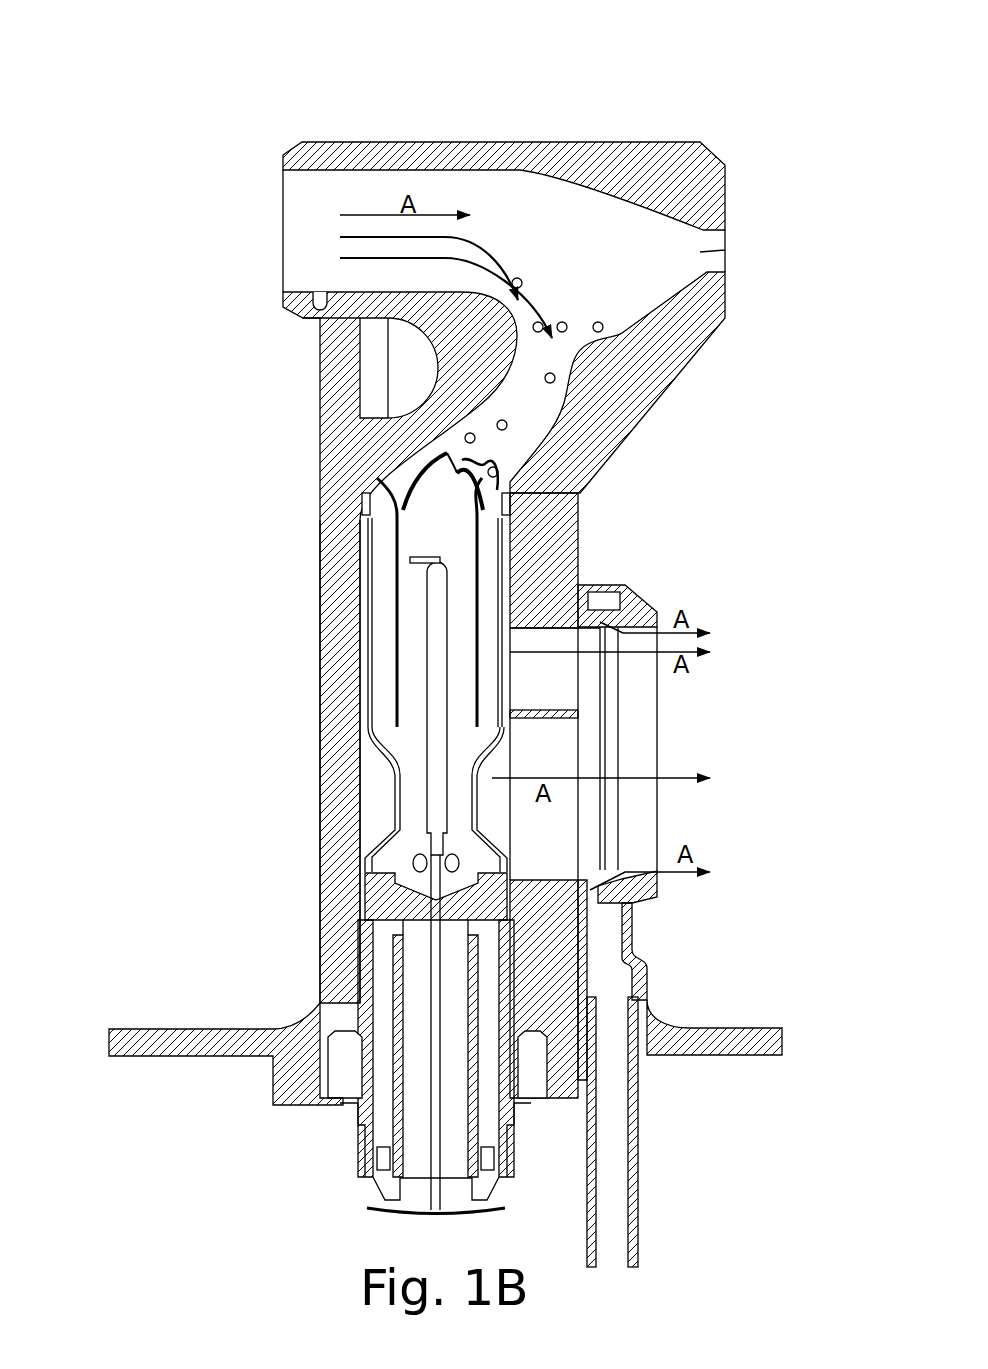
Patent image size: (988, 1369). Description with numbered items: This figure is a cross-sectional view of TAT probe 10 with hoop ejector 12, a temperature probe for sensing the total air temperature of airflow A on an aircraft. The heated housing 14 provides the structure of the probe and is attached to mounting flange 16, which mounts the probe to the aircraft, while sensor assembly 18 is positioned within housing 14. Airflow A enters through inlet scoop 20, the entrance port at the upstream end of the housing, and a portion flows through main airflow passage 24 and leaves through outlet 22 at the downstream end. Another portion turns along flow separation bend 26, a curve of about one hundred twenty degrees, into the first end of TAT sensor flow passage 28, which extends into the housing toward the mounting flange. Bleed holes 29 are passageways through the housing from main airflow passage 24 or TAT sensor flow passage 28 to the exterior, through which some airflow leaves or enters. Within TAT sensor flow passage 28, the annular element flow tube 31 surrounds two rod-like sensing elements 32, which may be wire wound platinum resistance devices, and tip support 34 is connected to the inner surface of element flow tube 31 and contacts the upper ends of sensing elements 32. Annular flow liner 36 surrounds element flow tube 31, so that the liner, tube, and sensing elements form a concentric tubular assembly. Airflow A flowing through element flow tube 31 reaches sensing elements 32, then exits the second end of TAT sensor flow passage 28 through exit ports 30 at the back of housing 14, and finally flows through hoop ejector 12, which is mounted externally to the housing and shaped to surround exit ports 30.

The TAT probe 10 is at (112, 90).
The hoop ejector 12 is at (652, 588).
The housing 14 is at (668, 337).
The mounting flange 16 is at (176, 1040).
The sensor assembly 18 is at (343, 705).
The inlet scoop 20 is at (306, 248).
The outlet 22 is at (725, 250).
The main airflow passage 24 is at (461, 193).
The flow separation bend 26 is at (507, 332).
The TAT sensor flow passage 28 is at (517, 430).
The bleed holes 29 is at (598, 322).
The exit ports 30 is at (547, 753).
The element flow tube 31 is at (395, 545).
The sensing elements 32 is at (437, 730).
The tip support 34 is at (410, 560).
The flow liner 36 is at (383, 643).